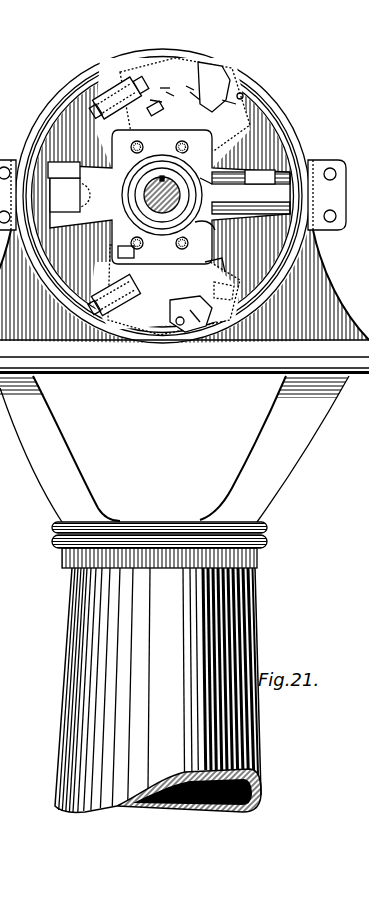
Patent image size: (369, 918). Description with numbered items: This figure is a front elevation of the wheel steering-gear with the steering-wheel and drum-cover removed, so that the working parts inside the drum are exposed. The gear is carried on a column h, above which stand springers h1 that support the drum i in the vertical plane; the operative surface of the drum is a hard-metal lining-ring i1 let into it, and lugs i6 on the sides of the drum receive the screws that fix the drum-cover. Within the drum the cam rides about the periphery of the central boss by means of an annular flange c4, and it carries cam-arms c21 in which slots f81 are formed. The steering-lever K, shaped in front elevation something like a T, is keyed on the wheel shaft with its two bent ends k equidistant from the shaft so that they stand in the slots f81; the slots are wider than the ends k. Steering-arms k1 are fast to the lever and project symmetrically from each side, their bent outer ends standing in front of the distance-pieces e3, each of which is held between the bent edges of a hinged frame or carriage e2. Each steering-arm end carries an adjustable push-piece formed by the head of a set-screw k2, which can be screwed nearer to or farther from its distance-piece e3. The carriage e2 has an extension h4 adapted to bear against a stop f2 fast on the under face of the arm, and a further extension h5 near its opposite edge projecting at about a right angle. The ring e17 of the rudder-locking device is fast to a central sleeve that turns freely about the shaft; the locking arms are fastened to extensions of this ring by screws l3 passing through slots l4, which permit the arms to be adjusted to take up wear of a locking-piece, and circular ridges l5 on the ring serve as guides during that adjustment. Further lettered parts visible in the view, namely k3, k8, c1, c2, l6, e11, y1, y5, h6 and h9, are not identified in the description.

The drum i is at (266, 95).
The lining-ring i1 is at (57, 105).
The lugs i6 is at (173, 195).
The stop f2 is at (190, 279).
The slots f81 is at (53, 180).
The steering-lever K is at (170, 197).
The ends of steering-lever k is at (282, 210).
The steering-arms k1 is at (126, 118).
The set-screw k2 is at (160, 290).
The armature spring k3 is at (140, 82).
The armature link k8 is at (224, 291).
The contact piece c1 is at (151, 108).
The contact arm c2 is at (205, 231).
The annular flange c4 is at (215, 270).
The cam-arms c21 is at (161, 173).
The screws l3 is at (133, 252).
The slots l4 is at (159, 196).
The circular ridges l5 is at (162, 195).
The lower lever l6 is at (165, 312).
The carriage e2 is at (166, 90).
The distance-piece e3 is at (157, 100).
The link e11 is at (170, 95).
The ring of rudder-locking device e17 is at (205, 180).
The pawl y1 is at (196, 100).
The pawl pin y5 is at (190, 88).
The column h is at (158, 690).
The springers h1 is at (76, 456).
The extension of carriage h4 is at (218, 92).
The extension of carriage h5 is at (192, 322).
The valve body h6 is at (210, 85).
The valve arm h9 is at (228, 96).